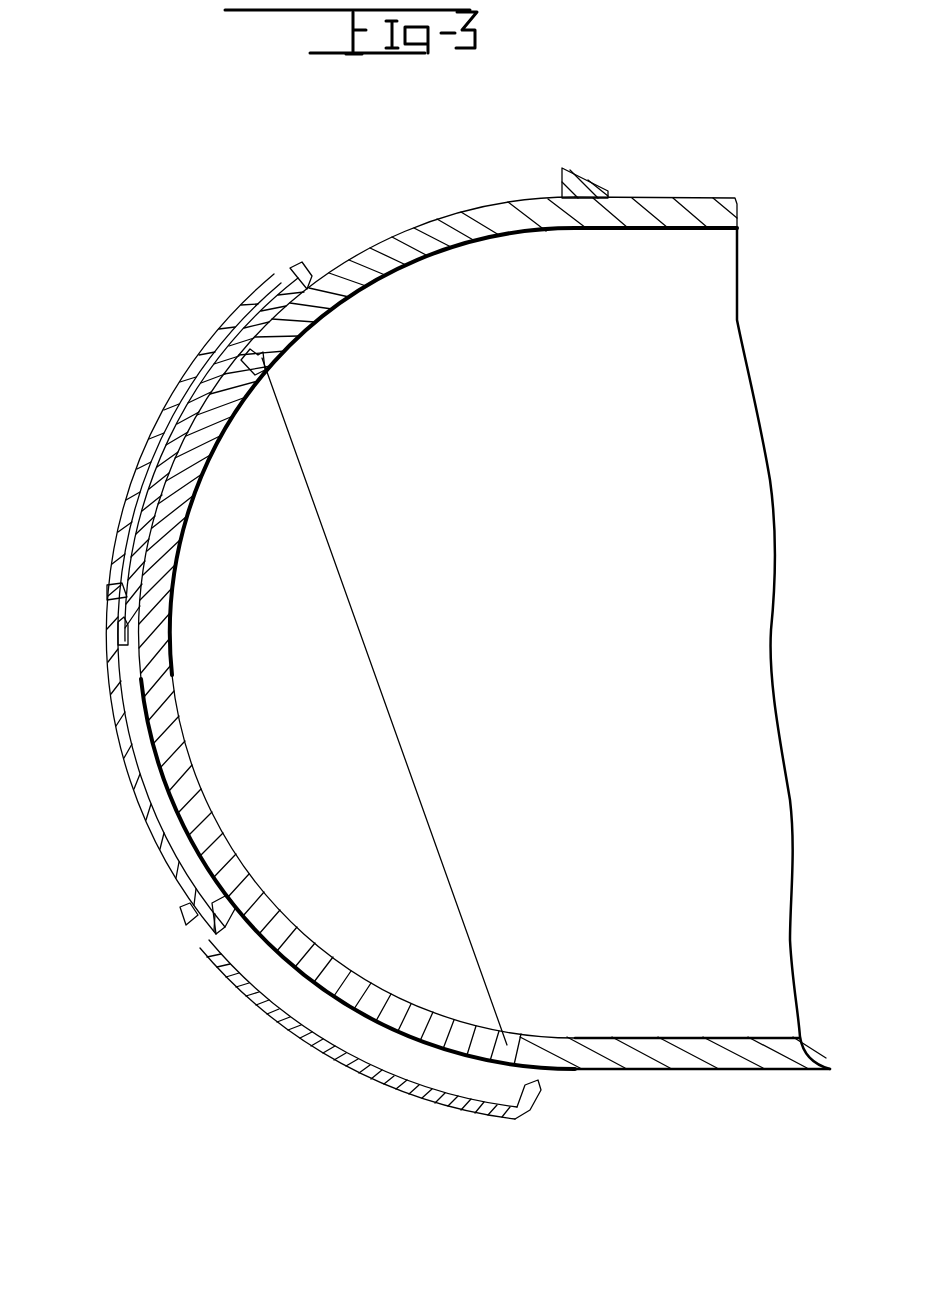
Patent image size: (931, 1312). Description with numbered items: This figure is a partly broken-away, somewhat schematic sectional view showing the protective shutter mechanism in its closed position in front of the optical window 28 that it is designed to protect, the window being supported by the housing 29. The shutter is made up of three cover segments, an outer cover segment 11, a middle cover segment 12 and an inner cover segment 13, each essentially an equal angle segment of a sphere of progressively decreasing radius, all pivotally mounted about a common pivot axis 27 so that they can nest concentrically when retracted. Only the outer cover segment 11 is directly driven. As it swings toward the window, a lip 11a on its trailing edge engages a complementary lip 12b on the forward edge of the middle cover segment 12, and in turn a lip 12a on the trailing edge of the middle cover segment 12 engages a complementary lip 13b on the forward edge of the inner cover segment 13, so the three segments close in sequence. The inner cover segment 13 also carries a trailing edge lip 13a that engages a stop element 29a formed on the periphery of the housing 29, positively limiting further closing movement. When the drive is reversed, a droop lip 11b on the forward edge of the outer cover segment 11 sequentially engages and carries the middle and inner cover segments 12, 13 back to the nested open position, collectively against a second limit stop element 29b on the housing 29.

The outer cover segment 11 is at (330, 1050).
The trailing edge lip 11a is at (188, 917).
The droop lip 11b is at (518, 1110).
The middle cover segment 12 is at (120, 748).
The trailing edge lip 12a is at (110, 598).
The forward edge lip 12b is at (235, 925).
The inner cover segment 13 is at (186, 400).
The trailing edge lip 13a is at (302, 278).
The forward edge lip 13b is at (130, 647).
The common pivot axis 27 is at (567, 634).
The optical window 28 is at (183, 728).
The housing 29 is at (454, 214).
The stop element 29a is at (320, 310).
The second limit stop element 29b is at (597, 190).